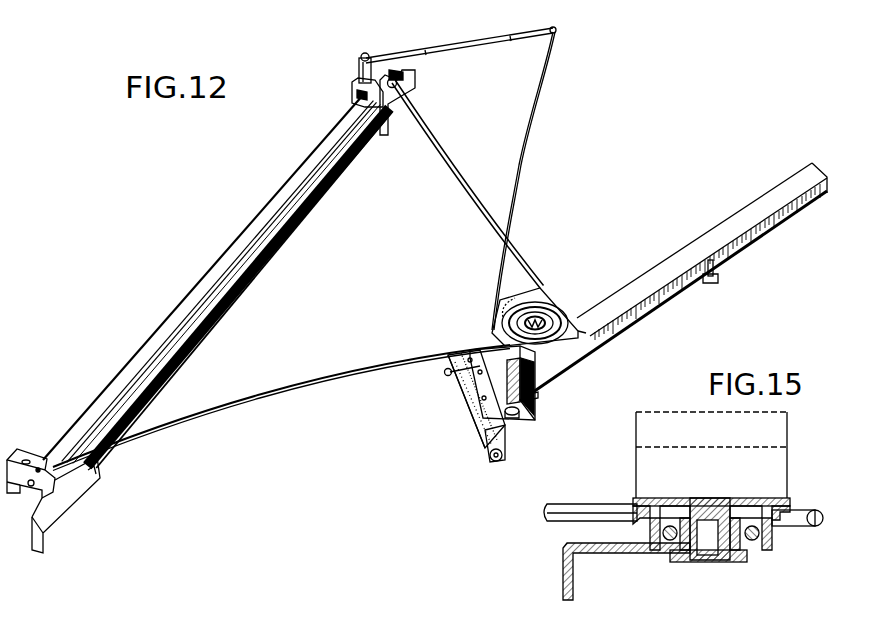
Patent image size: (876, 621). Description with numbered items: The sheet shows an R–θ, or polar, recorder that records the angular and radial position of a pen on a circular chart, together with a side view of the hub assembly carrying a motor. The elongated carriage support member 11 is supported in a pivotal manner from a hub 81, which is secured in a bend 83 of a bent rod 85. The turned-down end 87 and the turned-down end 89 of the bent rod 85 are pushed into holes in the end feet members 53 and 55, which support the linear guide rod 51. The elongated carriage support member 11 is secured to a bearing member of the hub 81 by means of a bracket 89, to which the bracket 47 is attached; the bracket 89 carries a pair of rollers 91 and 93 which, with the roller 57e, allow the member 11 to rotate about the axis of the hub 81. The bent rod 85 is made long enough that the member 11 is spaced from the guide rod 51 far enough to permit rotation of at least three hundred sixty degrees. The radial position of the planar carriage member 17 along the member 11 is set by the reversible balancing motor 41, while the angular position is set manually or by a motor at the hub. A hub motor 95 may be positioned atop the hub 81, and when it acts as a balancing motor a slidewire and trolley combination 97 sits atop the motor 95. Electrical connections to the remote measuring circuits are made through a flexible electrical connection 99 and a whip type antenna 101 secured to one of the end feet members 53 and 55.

In FIG. 12, the elongated carriage support member 11 is at (717, 225).
In FIG. 12, the planar carriage member 17 is at (720, 276).
In FIG. 12, the reversible balancing motor 41 is at (538, 396).
In FIG. 12, the bracket 47 is at (515, 412).
In FIG. 12, the linear guide rod 51 is at (257, 222).
In FIG. 12, the end foot member 53 is at (45, 455).
In FIG. 12, the end foot member 55 is at (352, 97).
In FIG. 12, the roller 57e is at (820, 158).
In FIG. 12, the hub 81 is at (550, 305).
In FIG. 12, the bend 83 is at (580, 318).
In FIG. 15, the bend 83 is at (794, 528).
In FIG. 12, the bent rod 85 is at (331, 373).
In FIG. 15, the bent rod 85 is at (608, 493).
In FIG. 12, the turned-down end 87 is at (60, 482).
In FIG. 12, the bracket 89 is at (388, 107).
In FIG. 15, the bracket 89 is at (563, 580).
In FIG. 12, the roller 91 is at (496, 460).
In FIG. 12, the roller 93 is at (445, 373).
In FIG. 15, the hub motor 95 is at (781, 477).
In FIG. 15, the slidewire and trolley combination 97 is at (784, 430).
In FIG. 12, the flexible electrical connection 99 is at (518, 190).
In FIG. 12, the whip type antenna 101 is at (505, 34).